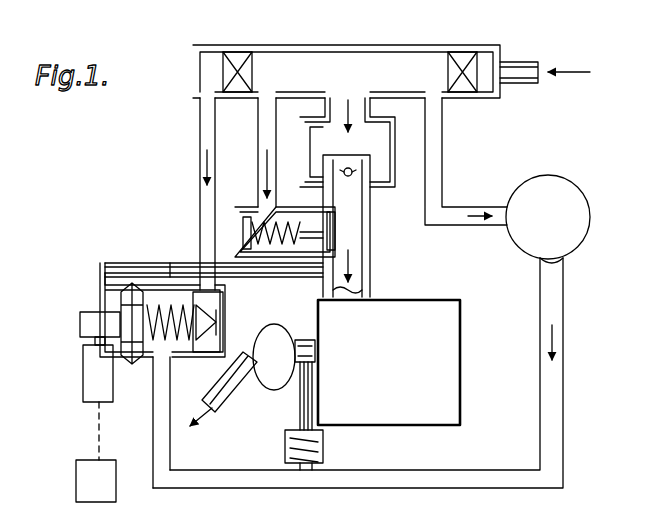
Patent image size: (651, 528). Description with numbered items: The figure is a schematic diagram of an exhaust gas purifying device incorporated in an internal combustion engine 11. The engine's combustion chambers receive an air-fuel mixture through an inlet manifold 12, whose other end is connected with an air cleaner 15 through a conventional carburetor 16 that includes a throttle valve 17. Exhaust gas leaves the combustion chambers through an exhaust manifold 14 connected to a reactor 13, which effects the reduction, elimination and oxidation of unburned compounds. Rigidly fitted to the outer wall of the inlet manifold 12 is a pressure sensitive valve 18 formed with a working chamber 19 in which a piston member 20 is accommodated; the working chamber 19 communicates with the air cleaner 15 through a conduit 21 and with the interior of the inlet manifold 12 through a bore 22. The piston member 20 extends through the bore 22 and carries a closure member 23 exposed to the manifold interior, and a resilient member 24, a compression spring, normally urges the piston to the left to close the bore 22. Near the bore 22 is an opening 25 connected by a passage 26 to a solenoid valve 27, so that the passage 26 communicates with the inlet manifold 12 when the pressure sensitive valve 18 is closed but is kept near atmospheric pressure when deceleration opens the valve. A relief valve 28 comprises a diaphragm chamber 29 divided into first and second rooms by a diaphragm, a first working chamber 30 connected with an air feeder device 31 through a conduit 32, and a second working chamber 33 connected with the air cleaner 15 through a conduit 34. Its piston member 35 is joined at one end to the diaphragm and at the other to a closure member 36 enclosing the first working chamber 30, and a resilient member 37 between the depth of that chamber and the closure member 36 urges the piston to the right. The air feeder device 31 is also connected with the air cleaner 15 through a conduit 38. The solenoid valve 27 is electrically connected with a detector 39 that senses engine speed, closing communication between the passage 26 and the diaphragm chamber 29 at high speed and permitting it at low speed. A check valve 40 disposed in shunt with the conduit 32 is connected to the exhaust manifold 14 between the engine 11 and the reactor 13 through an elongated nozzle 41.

The internal combustion engine 11 is at (453, 348).
The inlet manifold 12 is at (358, 270).
The reactor 13 is at (297, 338).
The exhaust manifold 14 is at (315, 362).
The air cleaner 15 is at (335, 62).
The carburetor 16 is at (400, 150).
The throttle valve 17 is at (370, 197).
The pressure sensitive valve 18 is at (237, 246).
The working chamber 19 is at (248, 225).
The piston member 20 is at (260, 207).
The conduit 21 is at (258, 165).
The bore 22 is at (308, 185).
The closure member 23 is at (350, 178).
The resilient member 24 is at (303, 292).
The opening 25 is at (338, 252).
The passage 26 is at (112, 282).
The solenoid valve 27 is at (82, 368).
The relief valve 28 is at (150, 305).
The diaphragm chamber 29 is at (125, 303).
The first working chamber 30 is at (155, 390).
The air feeder device 31 is at (560, 163).
The conduit 32 is at (467, 470).
The second working chamber 33 is at (218, 306).
The conduit 34 is at (200, 122).
The piston member 35 is at (172, 268).
The closure member 36 is at (219, 336).
The resilient member 37 is at (178, 300).
The conduit 38 is at (440, 127).
The detector 39 is at (78, 477).
The check valve 40 is at (285, 448).
The elongated nozzle 41 is at (297, 398).